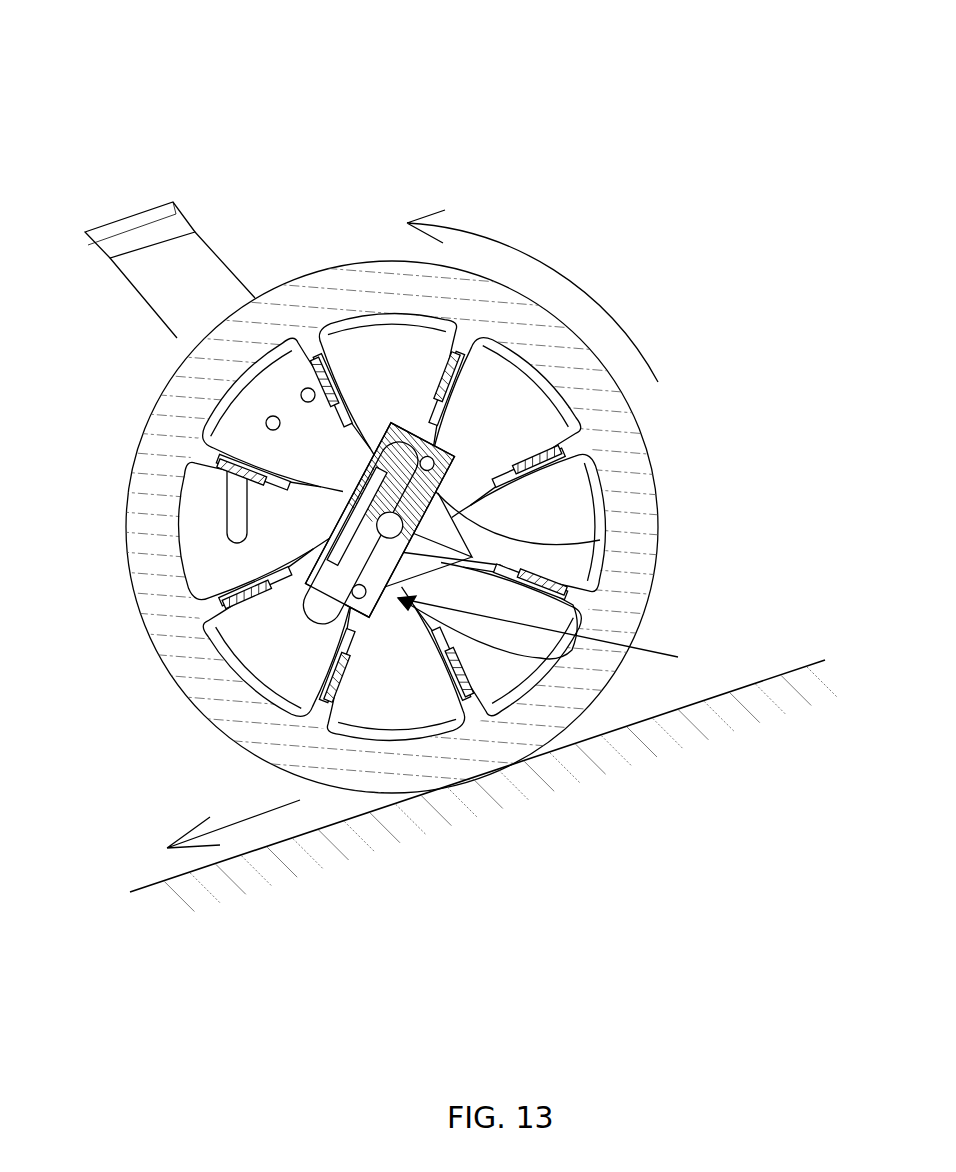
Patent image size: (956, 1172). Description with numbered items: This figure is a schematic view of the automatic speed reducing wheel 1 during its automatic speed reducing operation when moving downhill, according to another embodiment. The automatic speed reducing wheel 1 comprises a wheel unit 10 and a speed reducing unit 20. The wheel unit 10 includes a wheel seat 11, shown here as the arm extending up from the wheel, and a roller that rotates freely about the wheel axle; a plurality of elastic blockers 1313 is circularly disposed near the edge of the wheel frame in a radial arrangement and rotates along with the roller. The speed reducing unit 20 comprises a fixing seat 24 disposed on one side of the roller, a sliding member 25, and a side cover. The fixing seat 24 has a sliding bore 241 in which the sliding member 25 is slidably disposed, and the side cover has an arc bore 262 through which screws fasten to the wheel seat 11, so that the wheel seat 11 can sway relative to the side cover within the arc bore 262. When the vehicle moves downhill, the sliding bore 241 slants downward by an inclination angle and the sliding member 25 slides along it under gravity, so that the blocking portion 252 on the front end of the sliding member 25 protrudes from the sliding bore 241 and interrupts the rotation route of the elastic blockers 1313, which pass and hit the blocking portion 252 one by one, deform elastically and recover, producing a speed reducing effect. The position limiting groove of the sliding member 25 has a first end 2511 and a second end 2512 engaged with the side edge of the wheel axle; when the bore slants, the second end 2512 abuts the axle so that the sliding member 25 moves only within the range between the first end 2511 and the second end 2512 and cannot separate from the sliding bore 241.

The automatic speed reducing wheel 1 is at (708, 116).
The wheel unit 10 is at (450, 534).
The wheel seat 11 is at (135, 218).
The elastic blockers 1313 is at (447, 440).
The sliding bore 241 is at (300, 388).
The arc bore 262 is at (230, 517).
The sliding member 25 is at (313, 565).
The blocking portion 252 is at (235, 740).
The fixing seat 24 is at (600, 540).
The second end 2512 is at (560, 585).
The first end 2511 is at (572, 634).
The speed reducing unit 20 is at (423, 597).